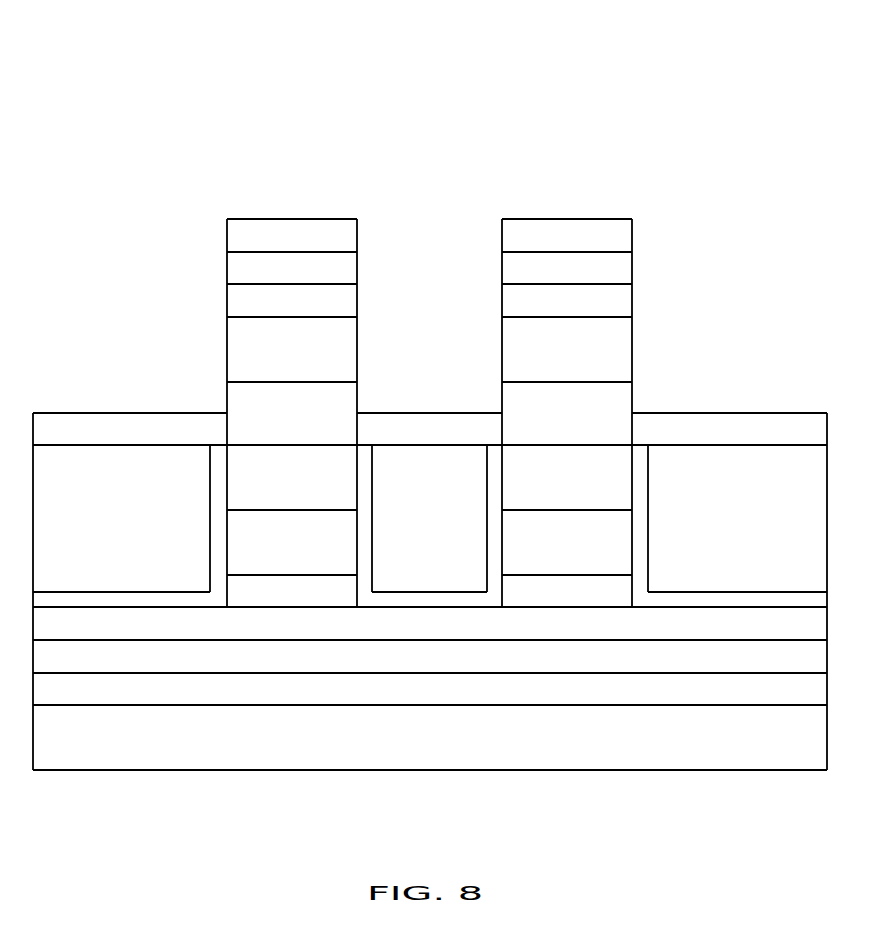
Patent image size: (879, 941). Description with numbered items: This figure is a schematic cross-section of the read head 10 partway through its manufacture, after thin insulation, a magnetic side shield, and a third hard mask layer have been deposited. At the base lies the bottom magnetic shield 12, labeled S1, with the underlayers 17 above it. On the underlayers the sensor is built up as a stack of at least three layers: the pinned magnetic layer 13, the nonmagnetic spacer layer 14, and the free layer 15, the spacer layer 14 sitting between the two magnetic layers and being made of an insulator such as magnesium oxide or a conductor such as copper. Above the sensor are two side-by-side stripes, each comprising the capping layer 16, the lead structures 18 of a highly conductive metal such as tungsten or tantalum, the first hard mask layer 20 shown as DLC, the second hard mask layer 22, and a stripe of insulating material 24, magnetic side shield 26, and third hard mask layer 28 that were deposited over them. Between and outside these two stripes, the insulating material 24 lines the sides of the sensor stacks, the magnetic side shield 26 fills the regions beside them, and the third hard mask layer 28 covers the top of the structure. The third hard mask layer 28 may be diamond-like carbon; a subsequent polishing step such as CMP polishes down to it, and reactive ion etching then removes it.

The read head 10 is at (437, 62).
The bottom magnetic shield 12 is at (363, 763).
The pinned magnetic layer 13 is at (363, 669).
The nonmagnetic spacer layer 14 is at (363, 635).
The free layer 15 is at (316, 602).
The capping layer 16 is at (316, 556).
The underlayers 17 is at (363, 700).
The lead structures 18 is at (316, 489).
The first hard mask layer 20 is at (316, 423).
The second hard mask layer 22 is at (316, 360).
The insulating material 24 is at (316, 311).
The magnetic side shield 26 is at (316, 279).
The third hard mask layer 28 is at (316, 246).